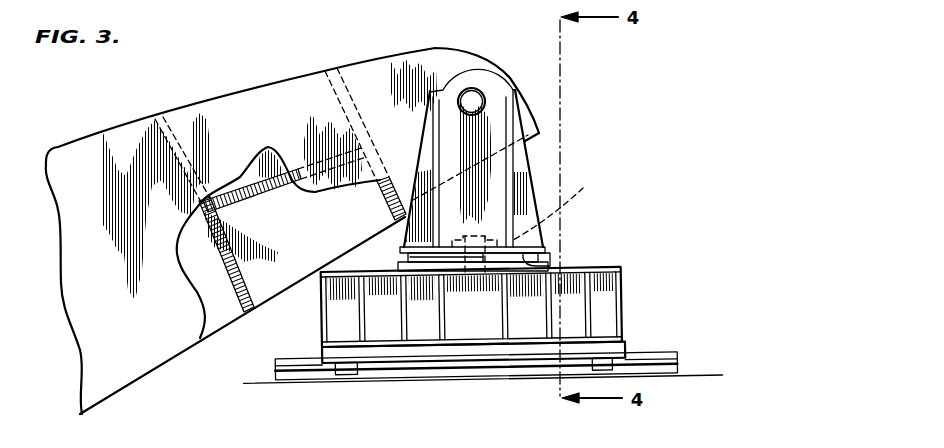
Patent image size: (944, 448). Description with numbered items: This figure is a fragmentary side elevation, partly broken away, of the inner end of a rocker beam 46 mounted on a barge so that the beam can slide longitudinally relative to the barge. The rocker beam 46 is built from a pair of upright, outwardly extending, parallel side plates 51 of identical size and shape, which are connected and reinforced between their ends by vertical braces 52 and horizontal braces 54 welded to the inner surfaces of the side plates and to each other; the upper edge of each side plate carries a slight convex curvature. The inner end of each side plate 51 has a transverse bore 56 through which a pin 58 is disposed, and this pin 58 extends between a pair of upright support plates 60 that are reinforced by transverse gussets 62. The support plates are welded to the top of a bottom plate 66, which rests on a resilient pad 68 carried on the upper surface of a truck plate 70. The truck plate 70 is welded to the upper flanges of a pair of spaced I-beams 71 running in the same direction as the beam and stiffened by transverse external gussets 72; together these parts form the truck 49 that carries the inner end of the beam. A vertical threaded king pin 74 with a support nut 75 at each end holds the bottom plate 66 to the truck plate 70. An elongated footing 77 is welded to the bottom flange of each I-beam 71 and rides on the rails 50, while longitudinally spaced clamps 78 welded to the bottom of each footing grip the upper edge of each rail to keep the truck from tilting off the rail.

The rocker beam 46 is at (244, 79).
The side plate 51 is at (368, 65).
The horizontal brace 54 is at (234, 196).
The vertical brace 52 is at (387, 200).
The transverse bore 56 is at (469, 91).
The pin 58 is at (471, 92).
The support plate 60 is at (490, 120).
The transverse gusset 62 is at (433, 157).
The king pin 74 is at (557, 202).
The support nut 75 is at (458, 237).
The truck 49 is at (570, 248).
The bottom plate 66 is at (400, 249).
The resilient pad 68 is at (545, 263).
The truck plate 70 is at (402, 266).
The I-beam 71 is at (471, 307).
The external gusset 72 is at (471, 307).
The footing 77 is at (473, 352).
The rail 50 is at (482, 367).
The clamp 78 is at (473, 366).